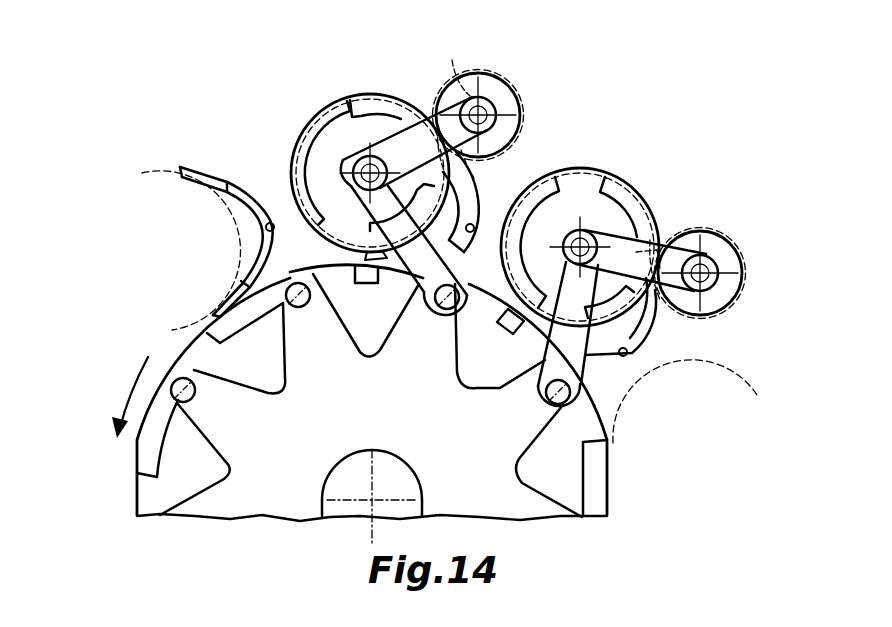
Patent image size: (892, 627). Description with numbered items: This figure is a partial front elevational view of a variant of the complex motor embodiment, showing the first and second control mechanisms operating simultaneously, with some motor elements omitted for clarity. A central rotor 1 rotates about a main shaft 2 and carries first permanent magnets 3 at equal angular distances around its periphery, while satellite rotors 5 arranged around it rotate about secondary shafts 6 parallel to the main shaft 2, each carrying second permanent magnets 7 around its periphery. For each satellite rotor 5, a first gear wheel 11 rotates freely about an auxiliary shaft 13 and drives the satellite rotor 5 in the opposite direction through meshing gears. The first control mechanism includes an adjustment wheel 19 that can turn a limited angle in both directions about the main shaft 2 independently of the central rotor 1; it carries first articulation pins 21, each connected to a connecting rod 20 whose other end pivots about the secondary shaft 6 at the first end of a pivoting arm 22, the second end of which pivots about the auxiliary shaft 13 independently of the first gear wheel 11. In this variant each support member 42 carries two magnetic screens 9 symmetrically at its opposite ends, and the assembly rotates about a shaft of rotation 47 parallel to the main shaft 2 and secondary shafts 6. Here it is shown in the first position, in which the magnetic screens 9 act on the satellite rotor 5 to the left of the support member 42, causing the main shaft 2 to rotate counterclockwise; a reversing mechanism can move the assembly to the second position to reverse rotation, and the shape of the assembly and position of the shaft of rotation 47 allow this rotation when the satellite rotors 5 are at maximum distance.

The central rotor 1 is at (148, 495).
The main shaft 2 is at (382, 478).
The first permanent magnets 3 is at (240, 323).
The satellite rotors 5 is at (352, 104).
The secondary shafts 6 is at (316, 112).
The second permanent magnets 7 is at (293, 161).
The magnetic screen 9 is at (188, 160).
The first gear wheel 11 is at (517, 102).
The auxiliary shaft 13 is at (500, 76).
The adjustment wheel 19 is at (540, 430).
The connecting rods 20 is at (337, 250).
The first articulation pins 21 is at (447, 312).
The pivoting arm 22 is at (400, 106).
The support member 42 is at (253, 262).
The shaft of rotation 47 is at (262, 226).